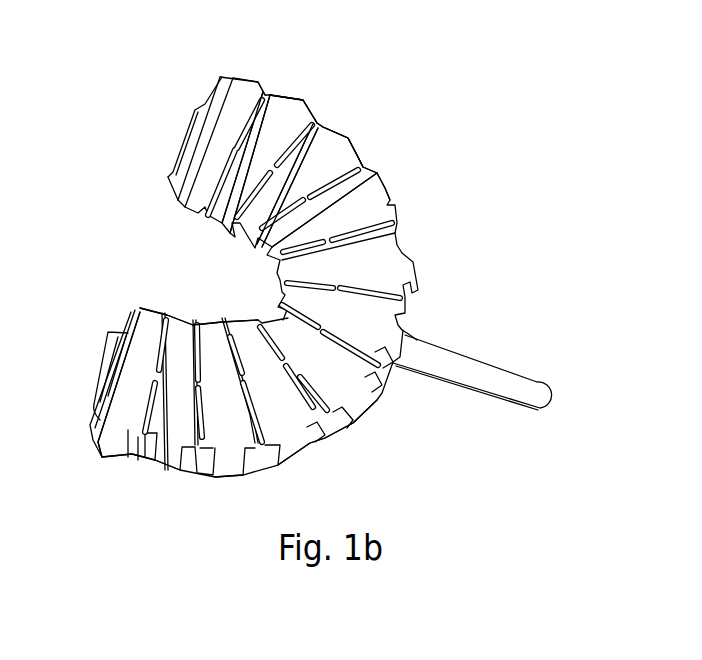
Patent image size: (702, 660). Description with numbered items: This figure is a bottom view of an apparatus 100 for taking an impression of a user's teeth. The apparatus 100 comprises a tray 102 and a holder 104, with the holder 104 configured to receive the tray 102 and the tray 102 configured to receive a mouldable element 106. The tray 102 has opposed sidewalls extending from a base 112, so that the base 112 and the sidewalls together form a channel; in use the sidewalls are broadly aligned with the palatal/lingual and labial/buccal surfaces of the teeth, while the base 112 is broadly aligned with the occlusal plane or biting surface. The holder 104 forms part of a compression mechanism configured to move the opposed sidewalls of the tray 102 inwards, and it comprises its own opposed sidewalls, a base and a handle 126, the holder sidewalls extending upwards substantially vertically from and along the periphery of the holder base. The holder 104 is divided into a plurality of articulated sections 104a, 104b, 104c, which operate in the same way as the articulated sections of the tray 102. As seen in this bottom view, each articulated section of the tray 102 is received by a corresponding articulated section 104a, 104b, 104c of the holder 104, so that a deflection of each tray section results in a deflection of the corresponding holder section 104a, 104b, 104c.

The apparatus 100 is at (447, 195).
The tray 102 is at (340, 423).
The holder 104 is at (450, 273).
The articulated section 104a is at (233, 102).
The articulated section 104b is at (286, 110).
The articulated section 104c is at (332, 142).
The mouldable element 106 is at (168, 177).
The base 112 is at (217, 108).
The handle 126 is at (528, 393).